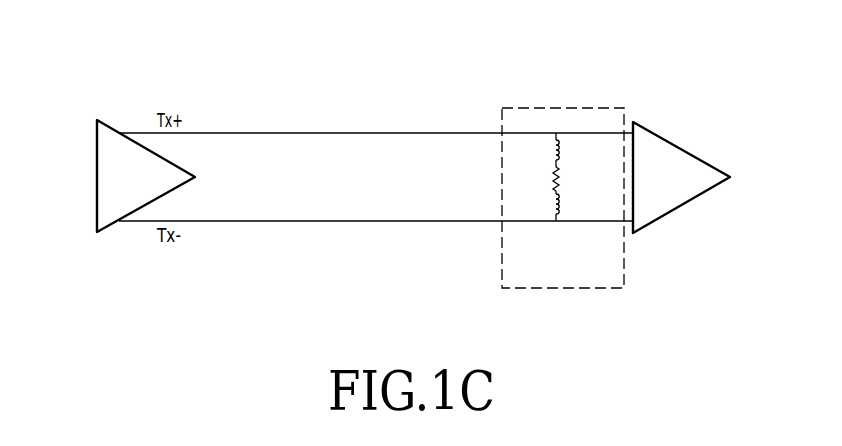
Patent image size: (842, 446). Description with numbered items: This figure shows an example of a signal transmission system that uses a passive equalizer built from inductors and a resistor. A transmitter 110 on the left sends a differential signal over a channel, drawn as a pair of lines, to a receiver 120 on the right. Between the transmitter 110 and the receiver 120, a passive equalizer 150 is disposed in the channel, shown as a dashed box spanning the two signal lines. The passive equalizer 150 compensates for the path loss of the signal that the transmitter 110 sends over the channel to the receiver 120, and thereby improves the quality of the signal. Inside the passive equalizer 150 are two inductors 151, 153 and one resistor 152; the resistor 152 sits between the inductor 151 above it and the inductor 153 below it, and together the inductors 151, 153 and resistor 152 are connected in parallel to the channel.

The transmitter 110 is at (97, 120).
The receiver 120 is at (688, 153).
The passive equalizer 150 is at (568, 107).
The inductor 151 is at (562, 151).
The resistor 152 is at (562, 177).
The inductor 153 is at (562, 205).